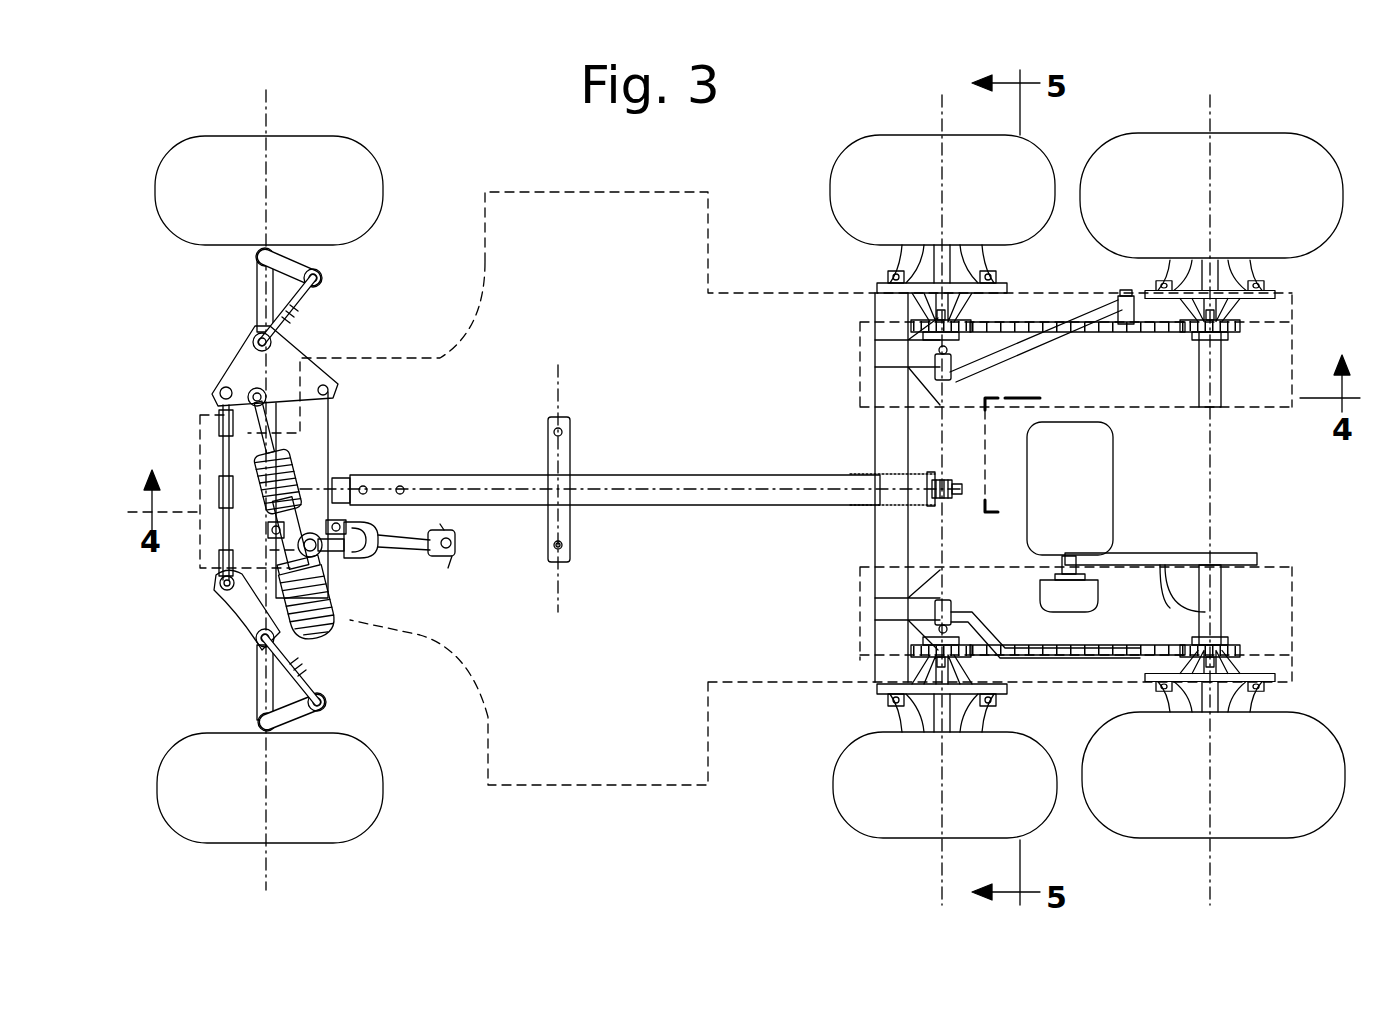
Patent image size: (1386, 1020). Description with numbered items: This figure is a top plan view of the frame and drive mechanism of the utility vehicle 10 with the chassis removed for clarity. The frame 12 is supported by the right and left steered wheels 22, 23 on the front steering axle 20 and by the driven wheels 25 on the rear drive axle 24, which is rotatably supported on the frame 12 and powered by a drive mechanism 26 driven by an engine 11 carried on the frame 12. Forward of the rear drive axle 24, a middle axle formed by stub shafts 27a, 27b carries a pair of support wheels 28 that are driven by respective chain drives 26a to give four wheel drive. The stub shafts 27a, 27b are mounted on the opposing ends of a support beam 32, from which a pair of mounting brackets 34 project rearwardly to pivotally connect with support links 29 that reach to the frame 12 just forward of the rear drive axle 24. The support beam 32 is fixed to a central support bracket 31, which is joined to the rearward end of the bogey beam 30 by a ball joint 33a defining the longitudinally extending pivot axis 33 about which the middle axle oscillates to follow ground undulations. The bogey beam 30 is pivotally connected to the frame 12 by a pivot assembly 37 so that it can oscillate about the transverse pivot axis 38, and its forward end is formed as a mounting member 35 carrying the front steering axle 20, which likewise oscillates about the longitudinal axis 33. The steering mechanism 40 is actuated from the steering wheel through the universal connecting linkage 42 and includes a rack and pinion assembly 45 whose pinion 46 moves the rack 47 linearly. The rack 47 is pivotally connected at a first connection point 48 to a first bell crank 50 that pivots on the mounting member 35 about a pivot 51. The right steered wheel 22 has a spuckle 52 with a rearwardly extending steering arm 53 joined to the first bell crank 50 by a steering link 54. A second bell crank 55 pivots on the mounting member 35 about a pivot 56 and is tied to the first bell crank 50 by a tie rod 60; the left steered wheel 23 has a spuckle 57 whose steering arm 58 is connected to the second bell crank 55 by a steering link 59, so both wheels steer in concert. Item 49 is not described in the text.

The utility vehicle 10 is at (439, 121).
The engine 11 is at (1120, 424).
The frame 12 is at (632, 790).
The front steering axle 20 is at (258, 298).
The right steered wheel 22 is at (222, 136).
The left steered wheel 23 is at (295, 845).
The rear drive axle 24 is at (1225, 352).
The driven wheels 25 is at (1238, 133).
The drive mechanism 26 is at (1225, 612).
The chain drives 26a is at (1023, 322).
The stub shaft 27a is at (895, 255).
The stub shaft 27b is at (880, 742).
The support wheels 28 is at (912, 135).
The support links 29 is at (988, 365).
The bogey beam 30 is at (442, 475).
The central support bracket 31 is at (935, 442).
The support beam 32 is at (872, 462).
The longitudinally extending pivot axis 33 is at (950, 500).
The ball joint 33a is at (930, 497).
The mounting brackets 34 is at (895, 348).
The mounting member 35 is at (330, 432).
The pivot assembly 37 is at (572, 430).
The transverse pivot axis 38 is at (562, 578).
The steering mechanism 40 is at (430, 735).
The universal connecting linkage 42 is at (445, 542).
The rack and pinion assembly 45 is at (360, 603).
The pinion 46 is at (245, 600).
The rack 47 is at (219, 446).
The first connection point 48 is at (236, 385).
The spring 49 is at (340, 640).
The first bell crank 50 is at (330, 352).
The pivot 51 is at (338, 385).
The spuckle 52 is at (258, 250).
The steering arm 53 is at (330, 258).
The steering link 54 is at (328, 292).
The second bell crank 55 is at (228, 602).
The pivot 56 is at (345, 555).
The spuckle 57 is at (258, 724).
The steering arm 58 is at (286, 722).
The steering link 59 is at (330, 702).
The tie rod 60 is at (222, 560).